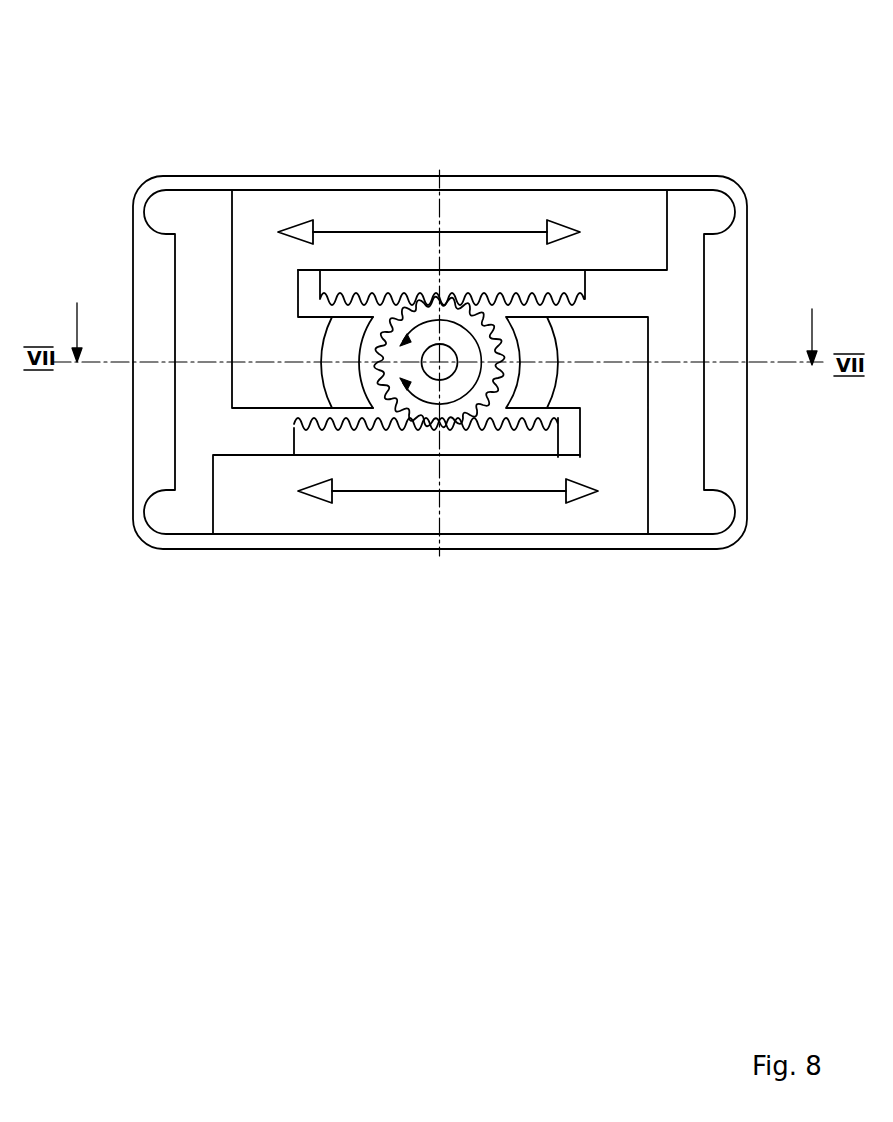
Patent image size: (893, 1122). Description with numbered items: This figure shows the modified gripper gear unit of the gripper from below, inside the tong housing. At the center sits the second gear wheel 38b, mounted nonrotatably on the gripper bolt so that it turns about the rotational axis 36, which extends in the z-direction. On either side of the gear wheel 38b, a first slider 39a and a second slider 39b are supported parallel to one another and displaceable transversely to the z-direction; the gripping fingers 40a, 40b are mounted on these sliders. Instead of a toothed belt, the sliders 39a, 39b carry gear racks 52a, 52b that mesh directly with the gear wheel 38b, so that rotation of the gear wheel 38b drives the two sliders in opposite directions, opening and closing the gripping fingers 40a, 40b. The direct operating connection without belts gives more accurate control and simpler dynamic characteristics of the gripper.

The rotational axis 36 is at (439, 362).
The second gear wheel 38b is at (462, 332).
The first slider 39a is at (382, 210).
The second slider 39b is at (478, 515).
The gripping finger 40a is at (348, 385).
The gripping finger 40b is at (538, 343).
The gear rack 52a is at (362, 285).
The gear rack 52b is at (538, 440).